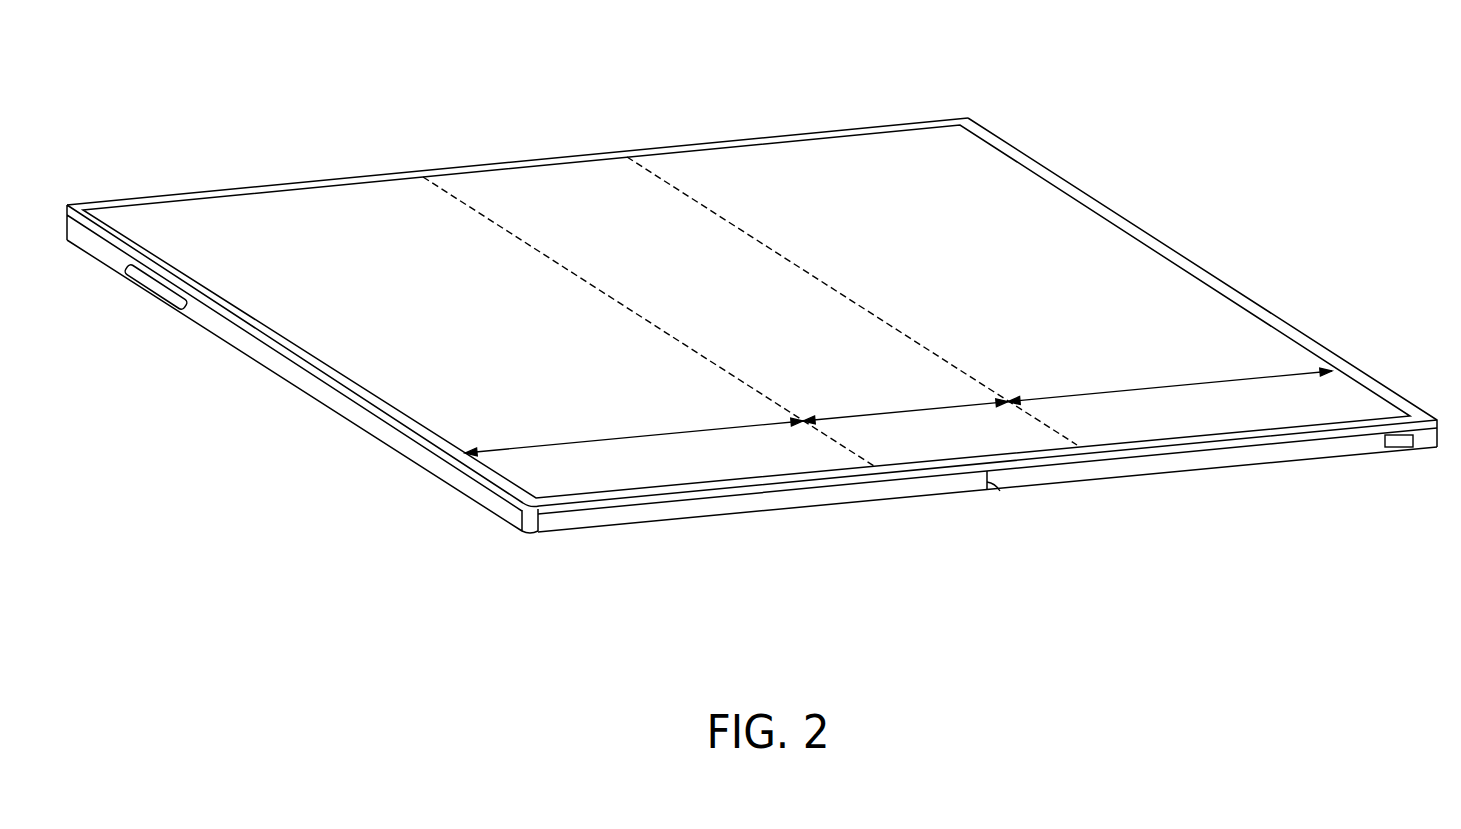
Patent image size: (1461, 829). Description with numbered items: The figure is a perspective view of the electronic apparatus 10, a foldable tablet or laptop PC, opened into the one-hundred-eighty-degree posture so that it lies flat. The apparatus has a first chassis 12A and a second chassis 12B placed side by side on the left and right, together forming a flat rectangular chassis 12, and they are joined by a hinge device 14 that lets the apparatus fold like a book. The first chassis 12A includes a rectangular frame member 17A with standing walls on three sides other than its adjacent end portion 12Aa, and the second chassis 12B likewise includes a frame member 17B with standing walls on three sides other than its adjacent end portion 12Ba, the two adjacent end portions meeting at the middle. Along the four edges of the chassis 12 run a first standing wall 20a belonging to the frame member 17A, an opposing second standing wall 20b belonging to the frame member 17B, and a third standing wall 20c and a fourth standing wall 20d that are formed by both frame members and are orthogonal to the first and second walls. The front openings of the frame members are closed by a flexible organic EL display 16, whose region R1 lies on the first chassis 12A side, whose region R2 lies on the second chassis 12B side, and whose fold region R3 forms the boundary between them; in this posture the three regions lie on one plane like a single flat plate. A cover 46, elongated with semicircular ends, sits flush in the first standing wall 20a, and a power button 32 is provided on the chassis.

The electronic apparatus 10 is at (131, 142).
The chassis 12 is at (752, 356).
The first chassis 12A is at (580, 409).
The second chassis 12B is at (1166, 334).
The adjacent end portion 12Aa is at (992, 484).
The adjacent end portion 12Ba is at (984, 476).
The hinge device 14 is at (746, 287).
The display 16 is at (996, 190).
The frame member 17A is at (573, 528).
The frame member 17B is at (1257, 464).
The first standing wall 20a is at (440, 470).
The second standing wall 20b is at (1315, 339).
The third standing wall 20c is at (762, 500).
The fourth standing wall 20d is at (426, 170).
The power button 32 is at (1400, 447).
The cover 46 is at (152, 280).
The region R1 is at (634, 431).
The region R2 is at (1170, 382).
The fold region R3 is at (750, 311).